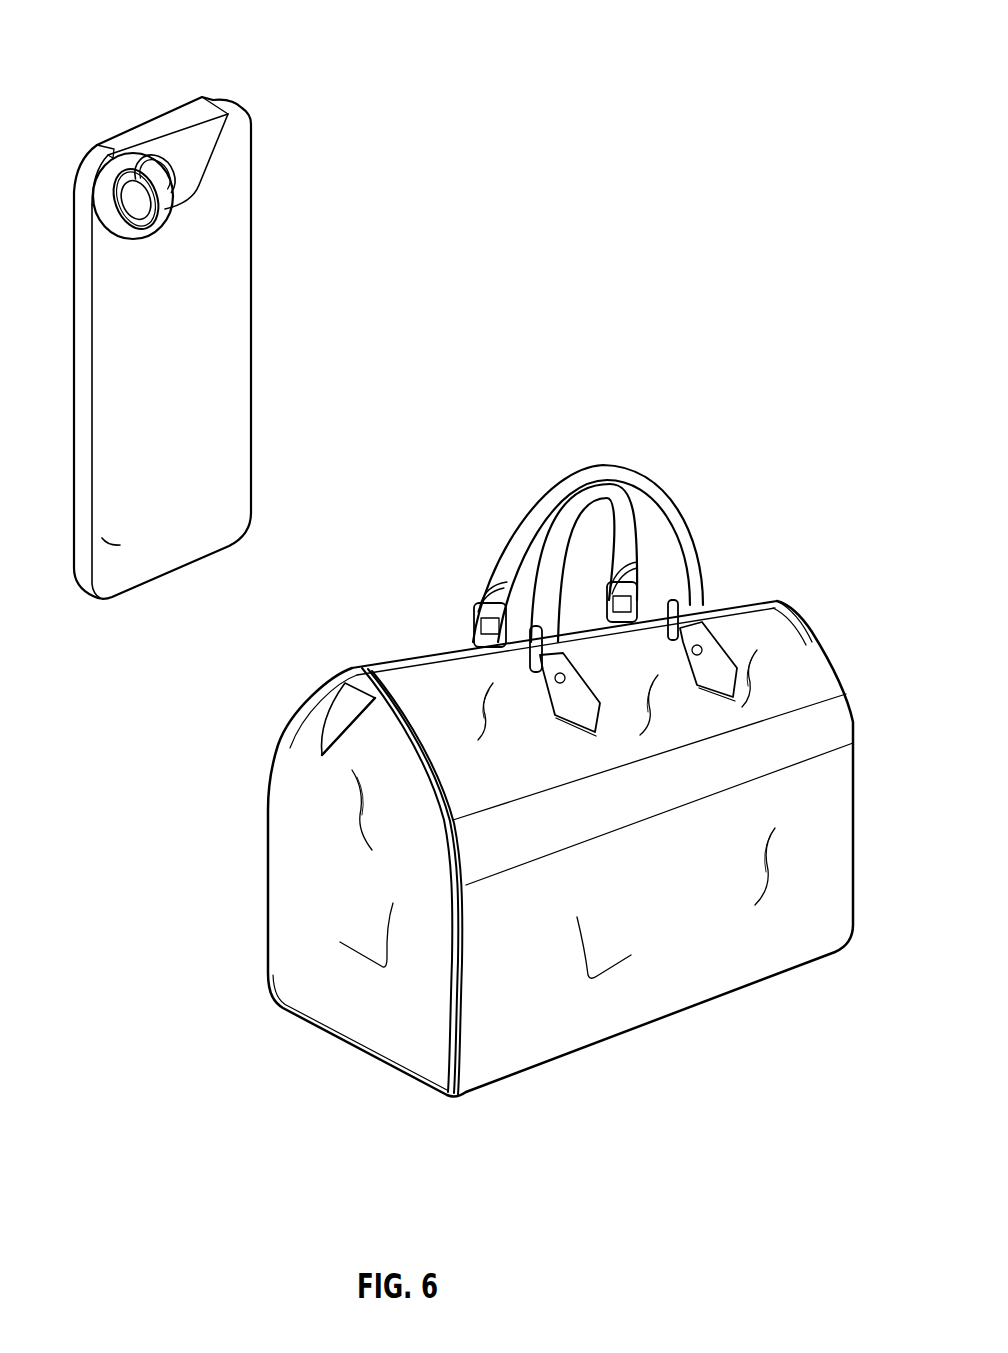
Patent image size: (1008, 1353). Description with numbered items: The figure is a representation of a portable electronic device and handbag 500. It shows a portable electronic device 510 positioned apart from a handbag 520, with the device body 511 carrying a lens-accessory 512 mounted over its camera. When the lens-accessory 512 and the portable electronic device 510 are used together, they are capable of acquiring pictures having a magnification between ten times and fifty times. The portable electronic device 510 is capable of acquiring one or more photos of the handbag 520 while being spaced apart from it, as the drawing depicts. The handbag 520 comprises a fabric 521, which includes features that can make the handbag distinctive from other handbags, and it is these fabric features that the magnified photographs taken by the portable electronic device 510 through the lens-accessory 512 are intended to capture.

The representation of a portable electronic device and handbag 500 is at (633, 36).
The portable electronic device 510 is at (248, 83).
The mobile device body 511 is at (254, 293).
The lens-accessory 512 is at (122, 133).
The handbag 520 is at (800, 612).
The fabric 521 is at (412, 657).